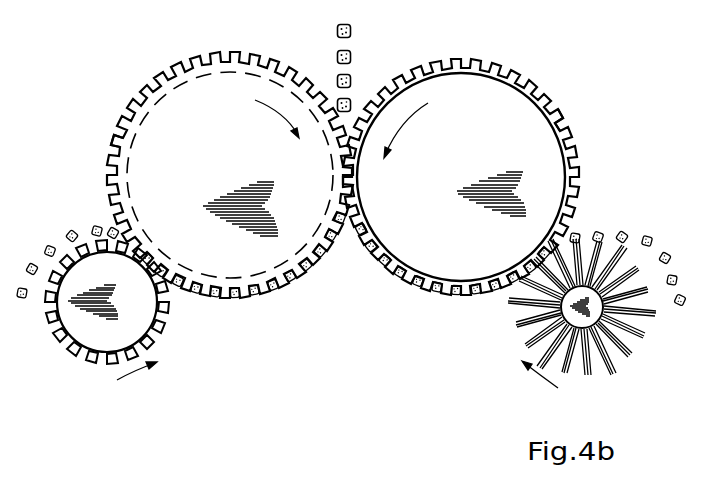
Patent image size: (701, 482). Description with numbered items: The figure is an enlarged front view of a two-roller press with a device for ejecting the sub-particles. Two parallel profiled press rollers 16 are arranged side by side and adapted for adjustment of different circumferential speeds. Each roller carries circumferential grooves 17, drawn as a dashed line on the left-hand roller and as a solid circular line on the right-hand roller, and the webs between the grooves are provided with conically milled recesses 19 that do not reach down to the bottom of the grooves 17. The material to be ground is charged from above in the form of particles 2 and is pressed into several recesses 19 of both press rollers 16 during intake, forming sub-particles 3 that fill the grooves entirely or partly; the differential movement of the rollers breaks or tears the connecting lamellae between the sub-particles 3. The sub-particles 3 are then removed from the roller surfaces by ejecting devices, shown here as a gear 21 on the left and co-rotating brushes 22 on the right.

The particles 2 is at (352, 31).
The sub-particles 3 is at (318, 256).
The press rollers 16 is at (140, 146).
The circumferential grooves 17 is at (148, 98).
The recesses 19 is at (115, 149).
The gear 21 is at (80, 335).
The co-rotating brushes 22 is at (612, 345).